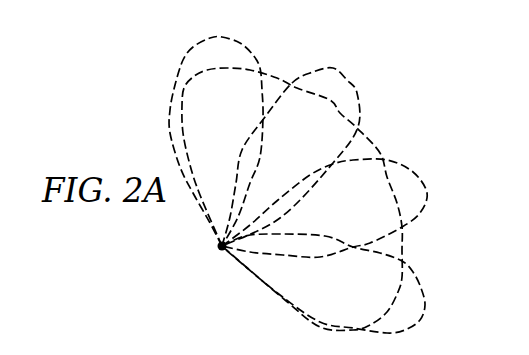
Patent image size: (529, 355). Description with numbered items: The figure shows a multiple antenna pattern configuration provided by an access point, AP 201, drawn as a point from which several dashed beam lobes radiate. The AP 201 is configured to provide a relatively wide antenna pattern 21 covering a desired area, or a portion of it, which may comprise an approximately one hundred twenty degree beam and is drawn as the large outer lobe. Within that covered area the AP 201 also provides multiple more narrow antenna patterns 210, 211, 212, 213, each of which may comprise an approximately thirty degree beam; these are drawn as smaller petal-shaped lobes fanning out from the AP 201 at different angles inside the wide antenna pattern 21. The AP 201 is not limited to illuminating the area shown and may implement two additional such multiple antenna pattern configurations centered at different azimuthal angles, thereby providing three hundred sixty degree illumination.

The AP 201 is at (215, 249).
The narrow antenna pattern 210 is at (213, 39).
The narrow antenna pattern 211 is at (330, 72).
The narrow antenna pattern 212 is at (427, 189).
The narrow antenna pattern 213 is at (423, 315).
The wide antenna pattern 21 is at (404, 237).